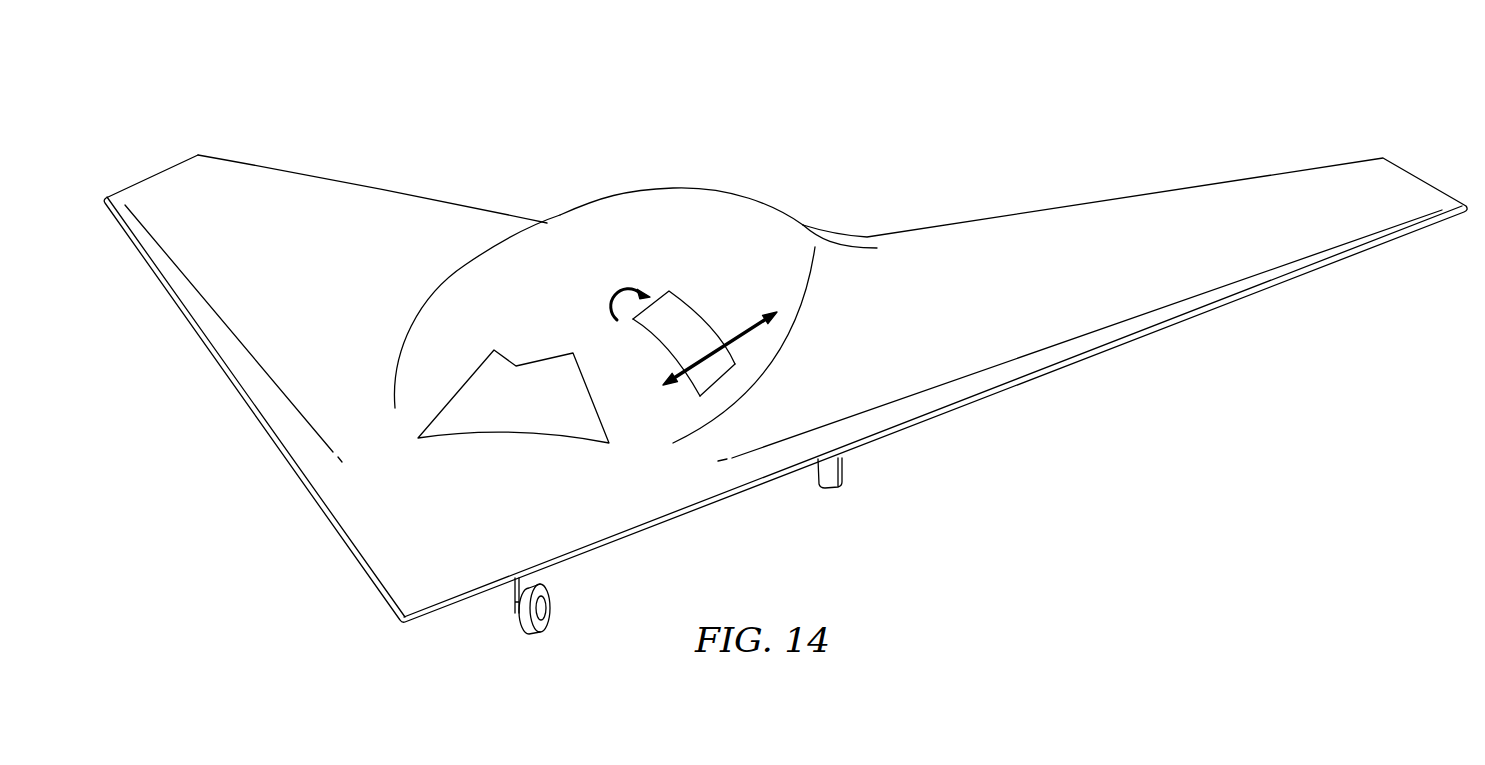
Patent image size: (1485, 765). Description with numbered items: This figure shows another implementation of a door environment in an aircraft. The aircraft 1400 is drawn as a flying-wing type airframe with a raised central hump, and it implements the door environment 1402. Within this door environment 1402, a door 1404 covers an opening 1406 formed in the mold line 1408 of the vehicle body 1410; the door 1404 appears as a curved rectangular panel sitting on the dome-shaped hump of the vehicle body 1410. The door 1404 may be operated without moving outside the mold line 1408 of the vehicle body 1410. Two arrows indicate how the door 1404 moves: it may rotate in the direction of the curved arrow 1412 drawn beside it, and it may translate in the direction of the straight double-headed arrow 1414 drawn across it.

The aircraft 1400 is at (572, 130).
The door environment 1402 is at (764, 225).
The door 1404 is at (681, 311).
The opening 1406 is at (693, 375).
The mold line 1408 is at (465, 300).
The vehicle body 1410 is at (677, 186).
The arrow 1412 is at (622, 289).
The arrow 1414 is at (741, 320).